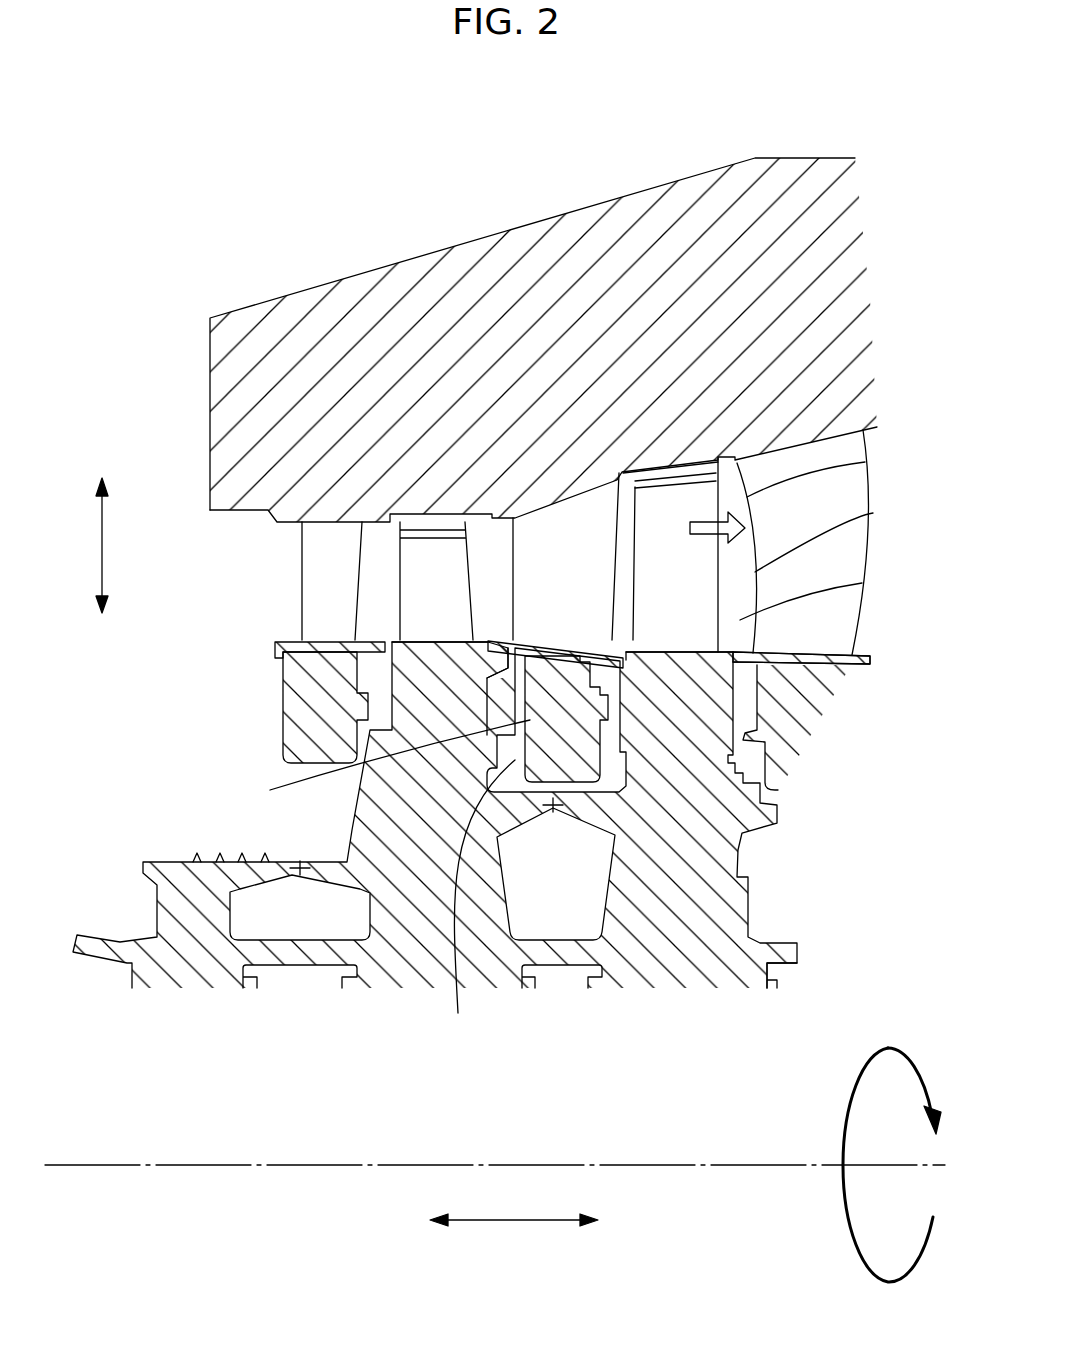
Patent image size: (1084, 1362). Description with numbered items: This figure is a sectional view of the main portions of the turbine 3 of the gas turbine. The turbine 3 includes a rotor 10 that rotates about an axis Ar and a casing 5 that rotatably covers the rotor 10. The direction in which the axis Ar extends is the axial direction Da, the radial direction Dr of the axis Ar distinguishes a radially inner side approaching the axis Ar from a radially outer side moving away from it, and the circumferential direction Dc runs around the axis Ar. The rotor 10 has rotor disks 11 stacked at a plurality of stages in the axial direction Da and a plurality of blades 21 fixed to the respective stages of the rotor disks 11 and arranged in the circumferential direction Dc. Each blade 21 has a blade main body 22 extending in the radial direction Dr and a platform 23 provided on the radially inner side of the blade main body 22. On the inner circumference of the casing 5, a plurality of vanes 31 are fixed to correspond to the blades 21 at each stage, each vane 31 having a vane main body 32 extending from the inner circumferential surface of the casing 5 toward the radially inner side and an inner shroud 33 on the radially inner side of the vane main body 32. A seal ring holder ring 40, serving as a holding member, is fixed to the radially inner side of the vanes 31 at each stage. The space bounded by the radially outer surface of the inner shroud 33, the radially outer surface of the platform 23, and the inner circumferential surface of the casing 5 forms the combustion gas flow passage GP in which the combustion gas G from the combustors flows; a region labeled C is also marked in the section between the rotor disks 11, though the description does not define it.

The turbine 3 is at (201, 246).
The casing 5 is at (316, 283).
The rotor 10 is at (427, 874).
The rotor disks 11 is at (388, 965).
The blades 21 is at (574, 555).
The blade main body 22 is at (873, 513).
The platform 23 is at (760, 607).
The vanes 31 is at (568, 558).
The vane main body 32 is at (835, 622).
The inner shroud 33 is at (870, 663).
The seal ring holder ring 40 is at (535, 718).
The combustion gas G is at (743, 462).
The combustion gas flow passage GP is at (747, 500).
The cavity C is at (481, 915).
The radial direction Dr is at (87, 545).
The axial direction Da is at (516, 1235).
The axis Ar is at (772, 1165).
The circumferential direction Dc is at (889, 1048).